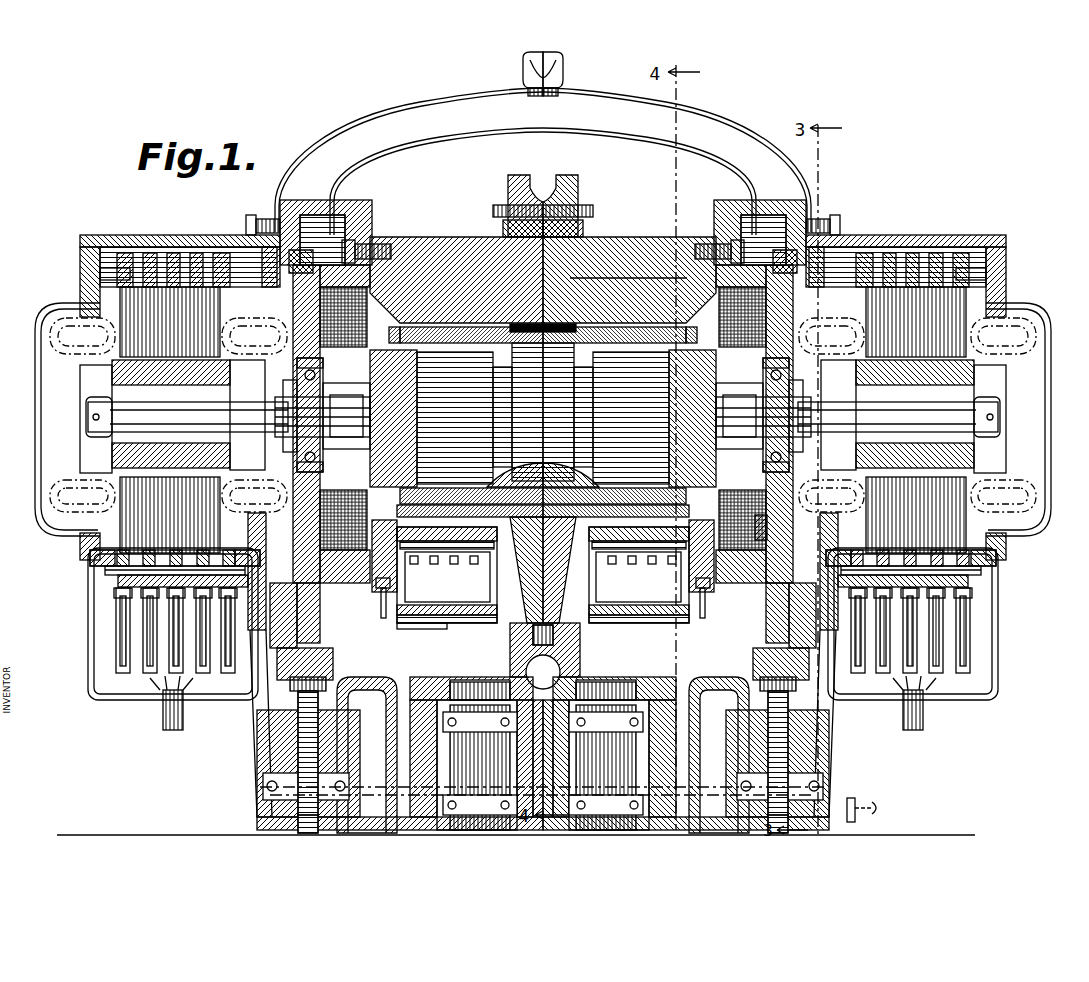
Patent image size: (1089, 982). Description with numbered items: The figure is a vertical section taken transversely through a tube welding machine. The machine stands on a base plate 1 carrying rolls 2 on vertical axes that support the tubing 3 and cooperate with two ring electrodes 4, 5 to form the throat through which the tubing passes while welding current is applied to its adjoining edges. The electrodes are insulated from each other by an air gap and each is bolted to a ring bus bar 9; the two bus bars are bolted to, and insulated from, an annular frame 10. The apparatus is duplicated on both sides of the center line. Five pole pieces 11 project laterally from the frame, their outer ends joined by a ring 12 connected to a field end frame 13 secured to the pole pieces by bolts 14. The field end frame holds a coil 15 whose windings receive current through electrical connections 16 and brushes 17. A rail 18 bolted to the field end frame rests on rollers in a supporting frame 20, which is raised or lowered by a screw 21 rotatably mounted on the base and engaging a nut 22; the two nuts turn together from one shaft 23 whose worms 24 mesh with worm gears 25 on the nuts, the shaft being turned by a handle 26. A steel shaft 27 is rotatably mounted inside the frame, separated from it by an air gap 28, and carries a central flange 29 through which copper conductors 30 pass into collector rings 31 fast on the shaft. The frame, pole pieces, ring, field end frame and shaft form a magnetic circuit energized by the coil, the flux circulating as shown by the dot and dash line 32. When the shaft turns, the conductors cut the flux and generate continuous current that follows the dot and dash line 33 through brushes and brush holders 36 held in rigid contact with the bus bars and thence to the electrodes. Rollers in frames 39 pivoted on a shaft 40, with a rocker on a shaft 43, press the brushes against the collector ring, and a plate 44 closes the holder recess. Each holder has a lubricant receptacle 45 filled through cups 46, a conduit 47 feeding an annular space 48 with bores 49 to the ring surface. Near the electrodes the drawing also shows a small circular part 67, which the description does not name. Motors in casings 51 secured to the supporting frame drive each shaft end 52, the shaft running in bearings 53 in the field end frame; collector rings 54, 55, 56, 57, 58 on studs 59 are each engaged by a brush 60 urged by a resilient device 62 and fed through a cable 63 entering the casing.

The base plate 1 is at (690, 828).
The rolls 2 is at (443, 680).
The tubing 3 is at (580, 655).
The ring electrode 4 is at (508, 182).
The ring electrode 5 is at (578, 180).
The ring bus bar 9 is at (503, 224).
The annular frame 10 is at (545, 562).
The pole pieces 11 is at (688, 240).
The ring 12 is at (701, 556).
The field end frame 13 is at (766, 600).
The bolts 14 is at (348, 240).
The coil 15 is at (785, 260).
The electrical connections 16 is at (765, 530).
The brushes 17 is at (222, 655).
The rail 18 is at (285, 262).
The supporting frame 20 is at (738, 128).
The screw 21 is at (298, 700).
The nut 22 is at (263, 790).
The shaft 23 is at (705, 790).
The worms 24 is at (810, 828).
The worm gears 25 is at (263, 778).
The handle 26 is at (872, 816).
The shaft 27 is at (543, 418).
The air gap 28 is at (530, 324).
The central flange 29 is at (543, 412).
The conductors 30 is at (440, 327).
The collector rings 31 is at (690, 326).
The dot and dash line 32 is at (637, 270).
The dot and dash line 33 is at (455, 575).
The brush holders 36 is at (533, 630).
The frames 39 is at (620, 565).
The shaft 40 is at (447, 577).
The shaft 43 is at (450, 615).
The plate 44 is at (435, 623).
The receptacle 45 is at (376, 584).
The cups 46 is at (382, 605).
The conduit 47 is at (415, 623).
The annular space 48 is at (383, 556).
The bores 49 is at (425, 505).
The motor casings 51 is at (180, 236).
The shaft end 52 is at (543, 417).
The bearings 53 is at (312, 385).
The collector ring 54 is at (222, 552).
The collector ring 55 is at (190, 550).
The collector ring 56 is at (190, 512).
The collector ring 57 is at (88, 557).
The collector ring 58 is at (94, 585).
The studs 59 is at (105, 574).
The brush 60 is at (118, 585).
The resilient device 62 is at (175, 648).
The cable 63 is at (163, 718).
The pivot 67 is at (543, 672).